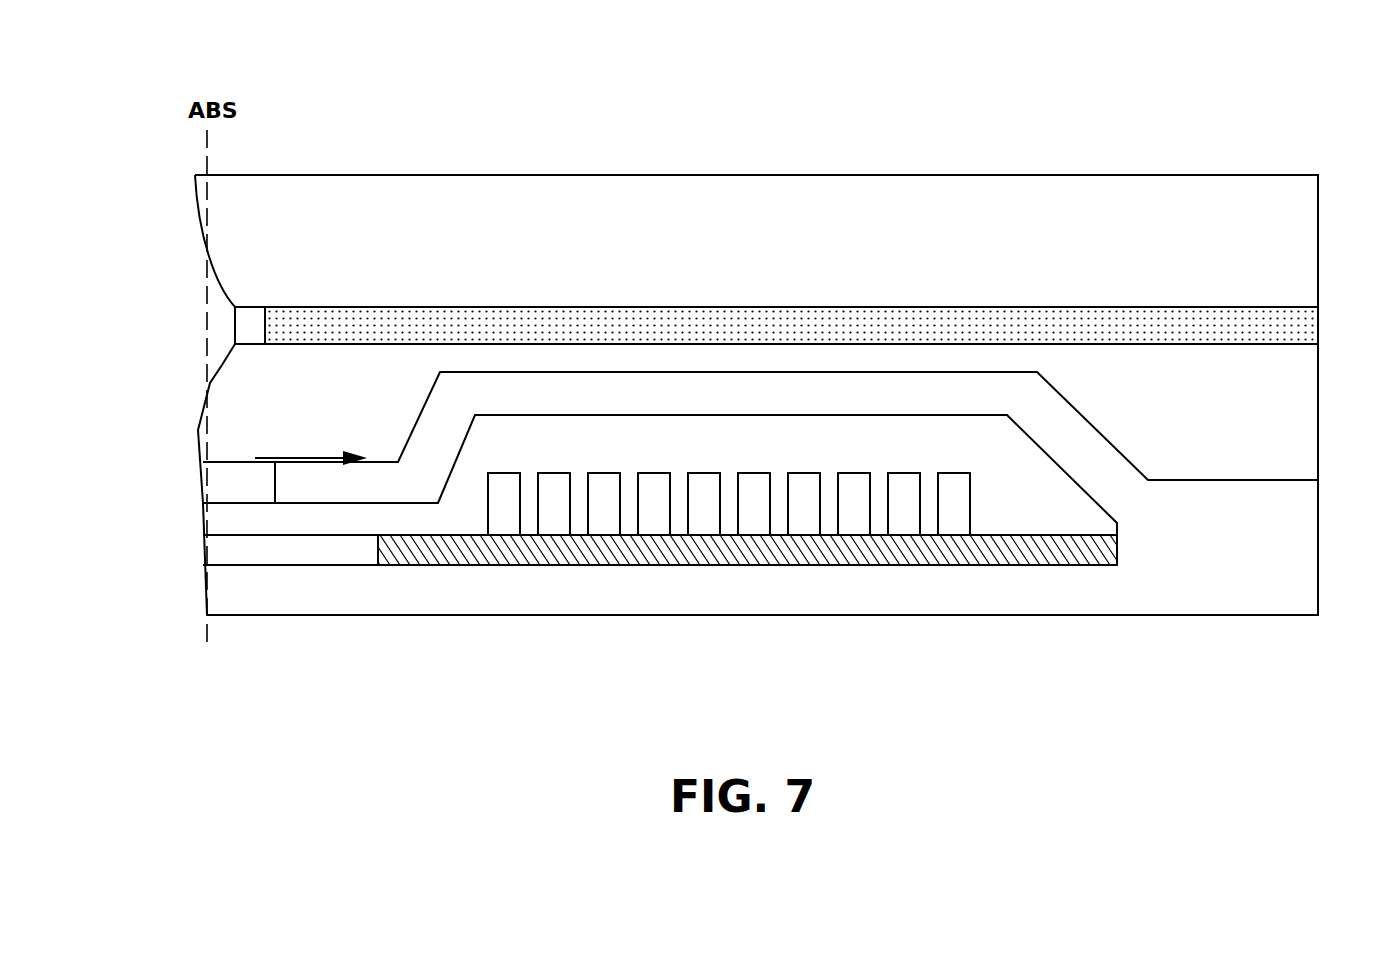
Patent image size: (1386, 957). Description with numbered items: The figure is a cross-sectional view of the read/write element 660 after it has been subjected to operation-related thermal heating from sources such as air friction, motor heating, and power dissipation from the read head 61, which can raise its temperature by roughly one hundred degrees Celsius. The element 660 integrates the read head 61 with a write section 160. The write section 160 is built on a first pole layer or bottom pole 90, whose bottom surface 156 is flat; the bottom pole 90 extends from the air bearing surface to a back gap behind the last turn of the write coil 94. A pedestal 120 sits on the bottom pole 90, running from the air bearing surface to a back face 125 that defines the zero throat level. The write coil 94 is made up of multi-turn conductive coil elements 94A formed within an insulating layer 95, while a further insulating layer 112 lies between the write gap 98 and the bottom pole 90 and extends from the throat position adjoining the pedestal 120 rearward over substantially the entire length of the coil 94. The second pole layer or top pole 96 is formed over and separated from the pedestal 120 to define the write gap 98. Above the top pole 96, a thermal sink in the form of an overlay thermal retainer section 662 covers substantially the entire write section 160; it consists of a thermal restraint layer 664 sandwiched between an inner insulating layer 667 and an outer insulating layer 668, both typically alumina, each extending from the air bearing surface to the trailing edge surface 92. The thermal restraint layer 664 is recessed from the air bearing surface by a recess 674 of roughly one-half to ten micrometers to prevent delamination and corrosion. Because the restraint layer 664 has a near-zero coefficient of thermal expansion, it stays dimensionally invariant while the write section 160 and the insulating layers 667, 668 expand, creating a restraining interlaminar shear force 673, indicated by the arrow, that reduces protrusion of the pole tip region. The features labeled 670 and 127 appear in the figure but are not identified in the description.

The read/write element 660 is at (708, 32).
The overcoat / upper body 670 is at (520, 175).
The outer insulating layer 668 is at (358, 232).
The thermal restraint layer 664 is at (298, 327).
The recess 674 is at (243, 327).
The thermal retainer section 662 is at (225, 353).
The inner insulating layer 667 is at (240, 418).
The second pole layer 96 is at (222, 482).
The write coil 94 is at (823, 415).
The insulating layer 95 is at (758, 457).
The restraining interlaminar shear force 673 is at (290, 458).
The coil elements 94A is at (957, 490).
The write gap 98 is at (226, 527).
The insulating layer 112 is at (752, 550).
The back face 125 is at (377, 548).
The coil layer right edge 127 is at (1117, 545).
The pedestal 120 is at (205, 558).
The first pole layer 90 is at (261, 559).
The write section 160 is at (175, 490).
The read head 61 is at (172, 596).
The trailing edge surface 92 is at (1318, 548).
The bottom surface 156 is at (1023, 615).